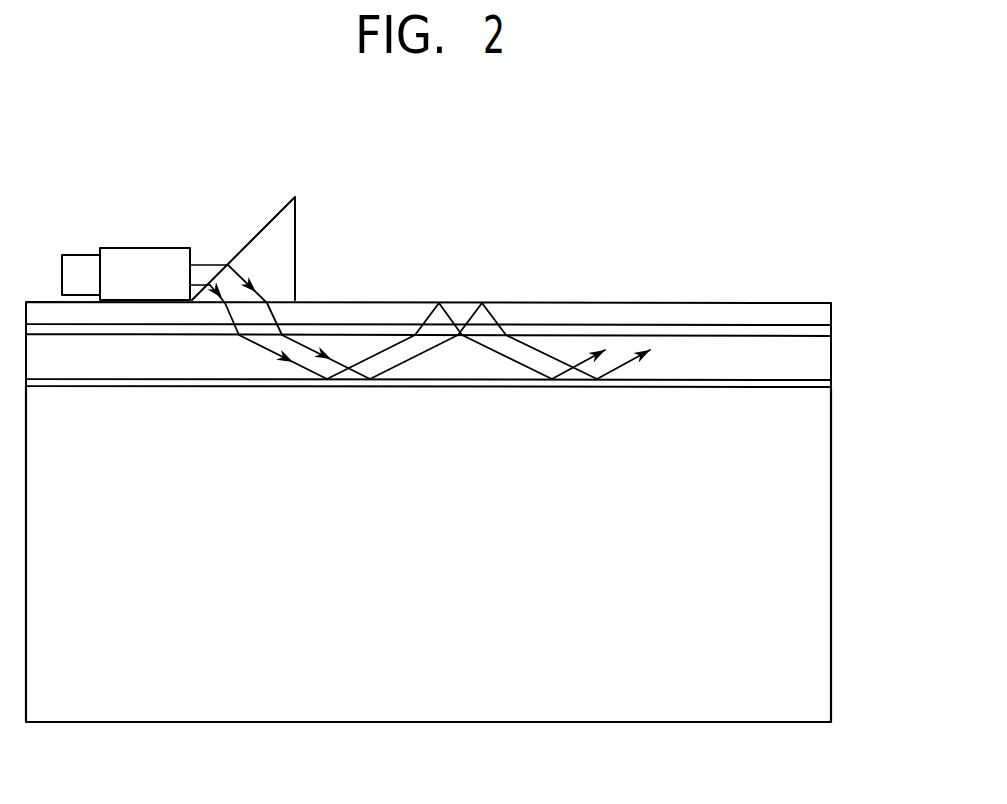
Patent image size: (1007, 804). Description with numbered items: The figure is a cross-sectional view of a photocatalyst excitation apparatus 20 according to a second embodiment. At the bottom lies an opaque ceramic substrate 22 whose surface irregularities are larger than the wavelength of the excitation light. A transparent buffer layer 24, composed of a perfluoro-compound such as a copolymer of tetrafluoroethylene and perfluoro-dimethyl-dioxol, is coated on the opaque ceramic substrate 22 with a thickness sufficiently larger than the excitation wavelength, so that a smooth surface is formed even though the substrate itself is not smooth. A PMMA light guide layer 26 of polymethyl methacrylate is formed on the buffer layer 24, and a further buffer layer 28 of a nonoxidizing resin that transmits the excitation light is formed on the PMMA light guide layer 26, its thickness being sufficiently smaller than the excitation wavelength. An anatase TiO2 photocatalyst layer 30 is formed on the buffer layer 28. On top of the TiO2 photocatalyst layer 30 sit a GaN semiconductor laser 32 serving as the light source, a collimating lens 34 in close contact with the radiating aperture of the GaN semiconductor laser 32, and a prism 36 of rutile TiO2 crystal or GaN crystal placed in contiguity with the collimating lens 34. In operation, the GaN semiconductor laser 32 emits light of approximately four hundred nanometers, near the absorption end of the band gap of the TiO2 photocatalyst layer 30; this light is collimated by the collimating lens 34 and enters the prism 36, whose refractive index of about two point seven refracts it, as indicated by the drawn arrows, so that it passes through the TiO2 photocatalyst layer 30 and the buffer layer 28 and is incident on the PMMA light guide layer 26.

The photocatalyst excitation apparatus 20 is at (466, 436).
The opaque ceramic substrate 22 is at (817, 520).
The buffer layer 24 is at (818, 385).
The PMMA light guide layer 26 is at (818, 366).
The buffer layer 28 is at (817, 331).
The TiO2 photocatalyst layer 30 is at (817, 315).
The GaN semiconductor laser 32 is at (76, 265).
The collimating lens 34 is at (152, 262).
The prism 36 is at (283, 251).